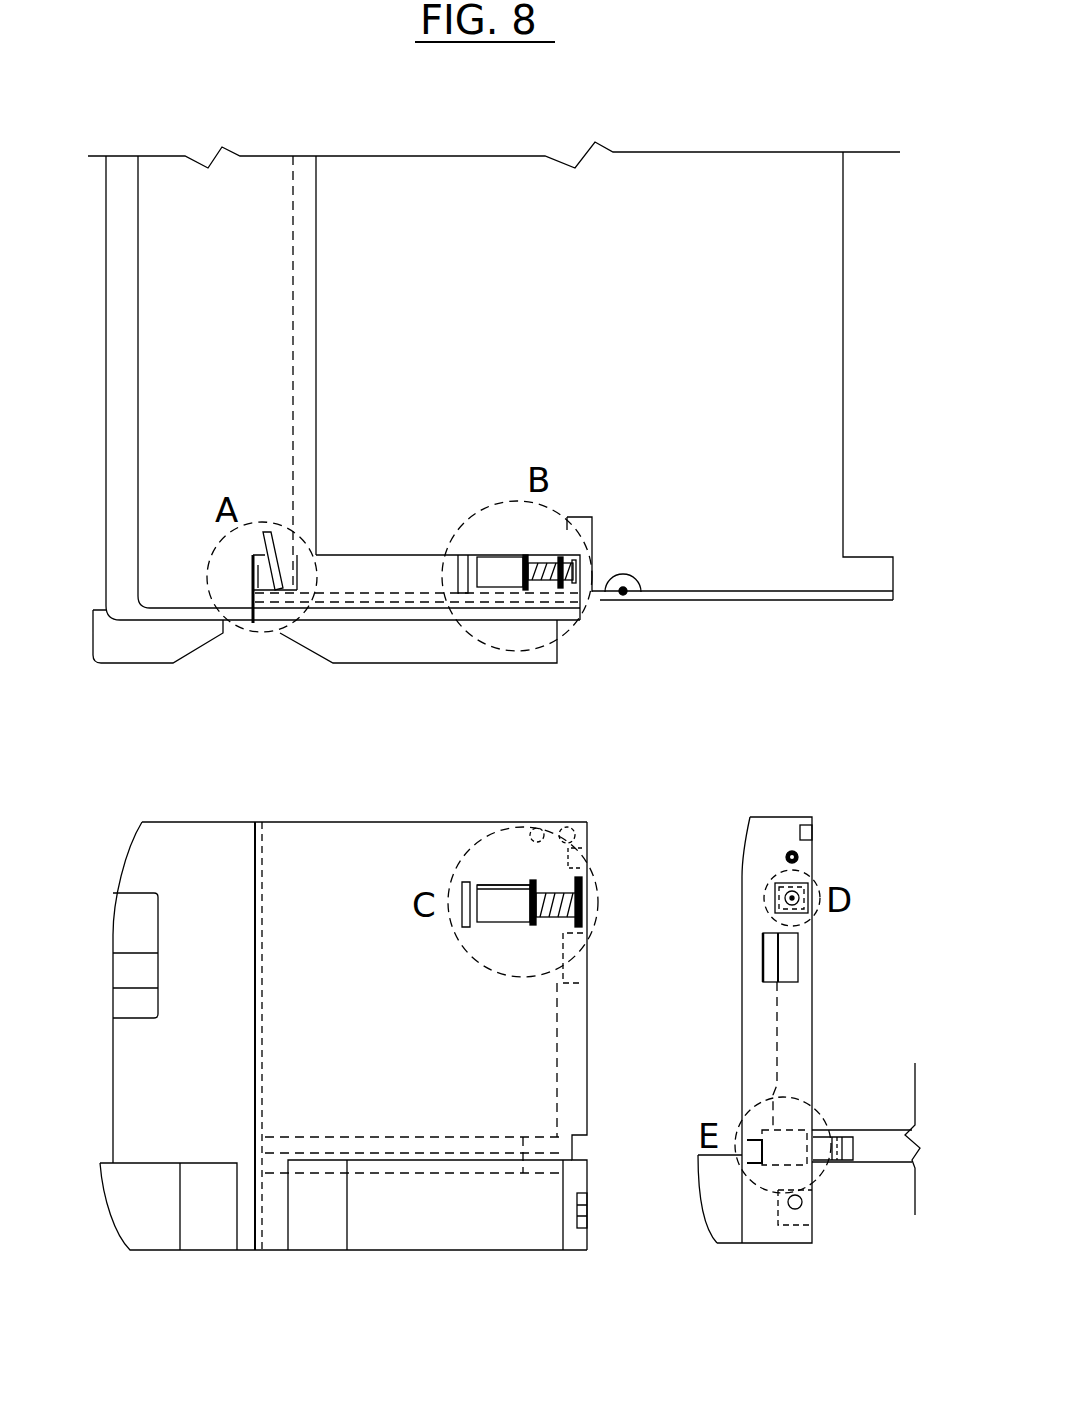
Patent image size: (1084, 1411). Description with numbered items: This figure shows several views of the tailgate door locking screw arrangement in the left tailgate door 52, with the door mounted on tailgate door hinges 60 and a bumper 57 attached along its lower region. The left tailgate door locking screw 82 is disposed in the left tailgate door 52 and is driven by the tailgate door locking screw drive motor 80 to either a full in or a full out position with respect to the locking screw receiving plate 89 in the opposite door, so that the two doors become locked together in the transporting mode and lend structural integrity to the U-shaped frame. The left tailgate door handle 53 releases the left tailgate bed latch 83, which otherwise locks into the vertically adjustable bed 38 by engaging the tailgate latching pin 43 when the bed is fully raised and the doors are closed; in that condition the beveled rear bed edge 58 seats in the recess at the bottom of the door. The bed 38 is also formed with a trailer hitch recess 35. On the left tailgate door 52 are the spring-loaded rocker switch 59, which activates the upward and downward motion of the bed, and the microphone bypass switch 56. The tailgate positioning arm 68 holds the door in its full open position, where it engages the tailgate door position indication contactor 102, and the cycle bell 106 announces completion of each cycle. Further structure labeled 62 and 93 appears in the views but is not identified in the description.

The cabinet housing 62 is at (263, 150).
The vertically adjustable bed 38 is at (660, 150).
The tailgate door hinges 60 is at (253, 627).
The left tailgate door 52 is at (340, 548).
The bumper 57 is at (466, 668).
The rear bed edge 58 is at (796, 604).
The right tailgate latching pin 43 is at (627, 566).
The trailer hitch recess 35 is at (571, 510).
The left tailgate door locking screw 82 is at (495, 548).
The left tailgate door position indication contactor 102 is at (283, 575).
The tailgate positioning arm 68 is at (250, 553).
The cycle bell 106 is at (539, 816).
The rocker switch 59 is at (569, 815).
The microphone bypass switch 56 is at (586, 856).
The tailgate door locking screw drive motor 80 is at (484, 883).
The left tailgate door handle 53 is at (590, 958).
The cable 93 is at (554, 1073).
The left tailgate bed latch 83 is at (537, 1134).
The right tailgate door locking screw receiving plate 89 is at (593, 1200).